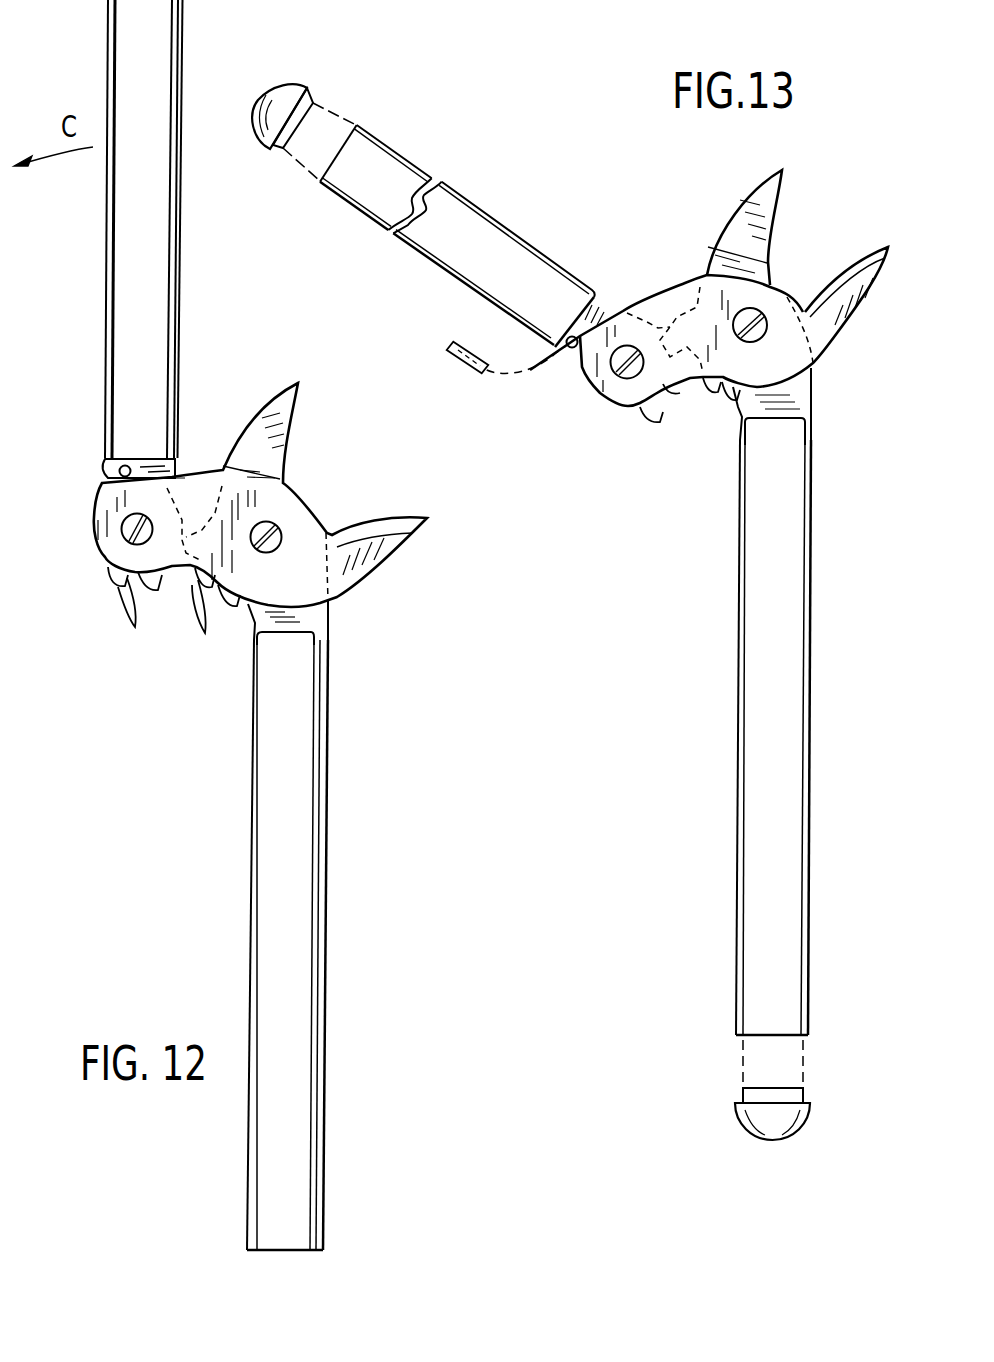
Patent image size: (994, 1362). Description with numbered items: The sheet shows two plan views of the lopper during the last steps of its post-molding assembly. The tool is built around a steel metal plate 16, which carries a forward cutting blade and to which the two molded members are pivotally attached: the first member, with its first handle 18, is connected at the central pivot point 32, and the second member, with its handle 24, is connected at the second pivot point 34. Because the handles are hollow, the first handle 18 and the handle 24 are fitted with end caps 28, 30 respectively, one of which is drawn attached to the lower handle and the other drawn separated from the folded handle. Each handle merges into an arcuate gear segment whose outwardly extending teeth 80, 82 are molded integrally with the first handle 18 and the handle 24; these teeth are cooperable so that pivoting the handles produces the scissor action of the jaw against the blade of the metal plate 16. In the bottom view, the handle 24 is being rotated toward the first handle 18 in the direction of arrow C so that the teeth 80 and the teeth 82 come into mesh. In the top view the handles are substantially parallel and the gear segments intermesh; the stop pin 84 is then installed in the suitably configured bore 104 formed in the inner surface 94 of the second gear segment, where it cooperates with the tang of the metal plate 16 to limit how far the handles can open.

In FIG. 12, the metal plate 16 is at (297, 533).
In FIG. 13, the metal plate 16 is at (709, 288).
In FIG. 12, the first handle 18 is at (297, 1188).
In FIG. 13, the first handle 18 is at (790, 932).
In FIG. 12, the handle 24 is at (126, 80).
In FIG. 13, the handle 24 is at (490, 237).
In FIG. 13, the end cap 28 is at (760, 1120).
In FIG. 13, the end cap 30 is at (285, 100).
In FIG. 12, the central pivot point 32 is at (323, 603).
In FIG. 12, the second pivot point 34 is at (117, 548).
In FIG. 12, the teeth 80 is at (216, 618).
In FIG. 12, the teeth 82 is at (135, 615).
In FIG. 13, the pin 84 is at (475, 368).
In FIG. 12, the inner surface 94 is at (188, 457).
In FIG. 12, the bore 104 is at (118, 470).